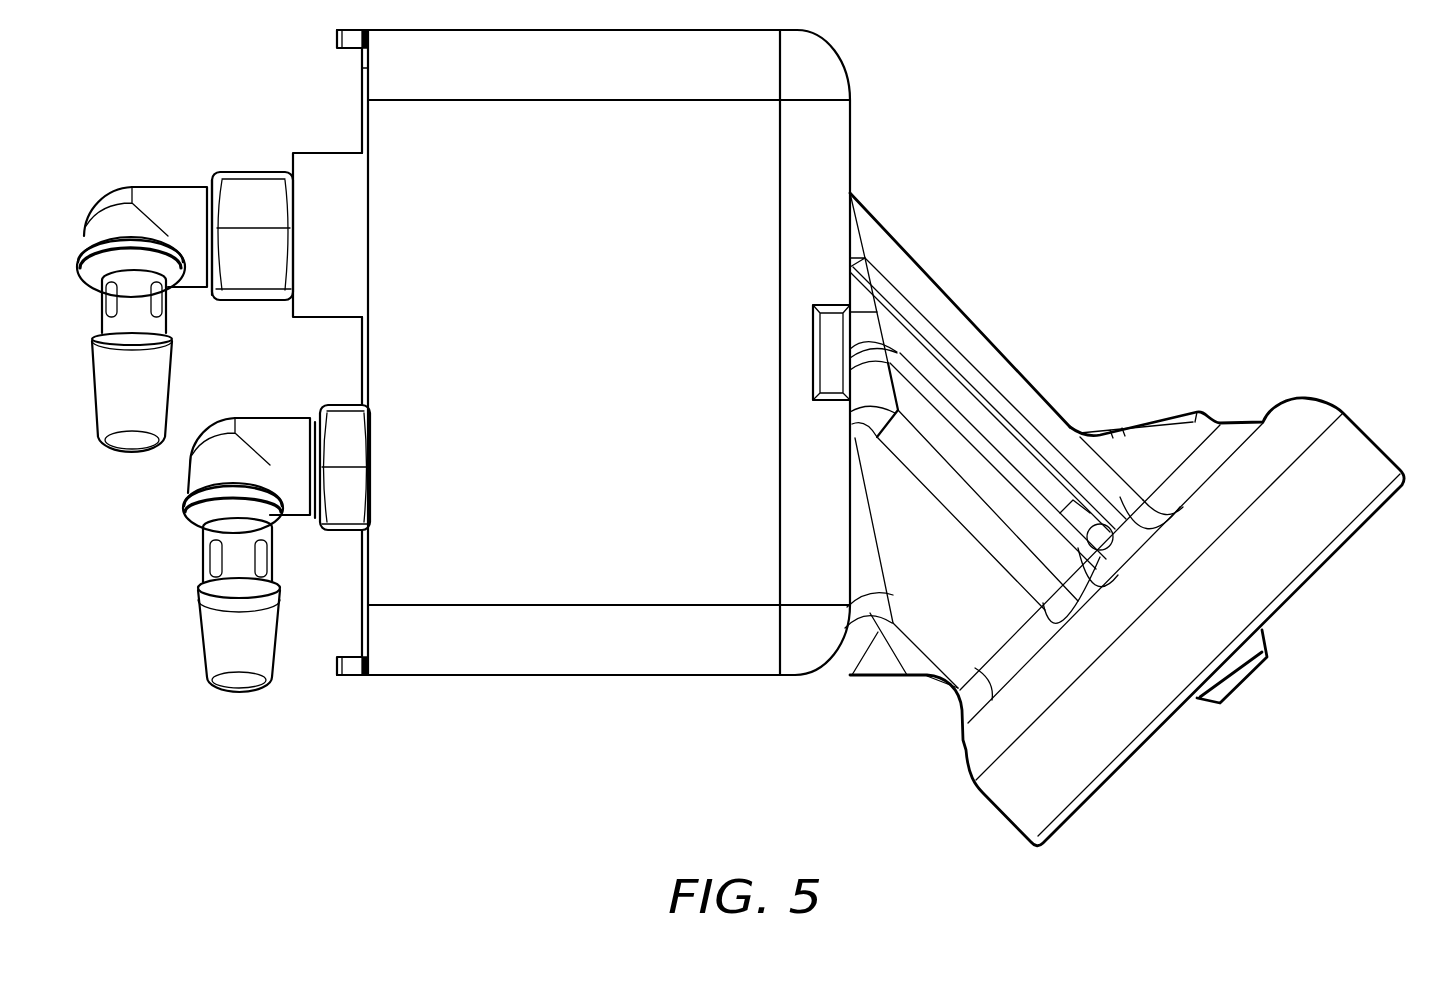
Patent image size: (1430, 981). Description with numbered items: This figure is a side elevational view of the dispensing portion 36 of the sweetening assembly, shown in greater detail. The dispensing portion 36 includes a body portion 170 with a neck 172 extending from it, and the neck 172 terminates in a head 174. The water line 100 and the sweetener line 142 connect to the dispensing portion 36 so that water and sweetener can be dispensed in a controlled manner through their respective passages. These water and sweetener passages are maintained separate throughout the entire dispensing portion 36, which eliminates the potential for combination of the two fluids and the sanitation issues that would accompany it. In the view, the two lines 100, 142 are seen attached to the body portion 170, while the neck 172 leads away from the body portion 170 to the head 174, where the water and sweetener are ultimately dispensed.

The dispensing portion 36 is at (1095, 466).
The water line 100 is at (220, 628).
The sweetener line 142 is at (160, 323).
The body portion 170 is at (828, 680).
The neck 172 is at (990, 353).
The head 174 is at (1003, 813).